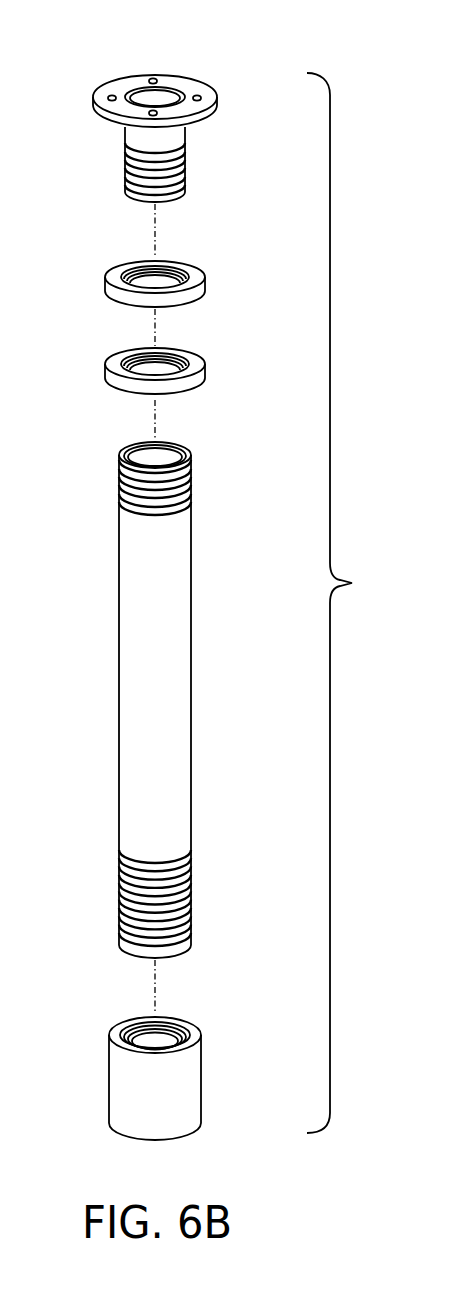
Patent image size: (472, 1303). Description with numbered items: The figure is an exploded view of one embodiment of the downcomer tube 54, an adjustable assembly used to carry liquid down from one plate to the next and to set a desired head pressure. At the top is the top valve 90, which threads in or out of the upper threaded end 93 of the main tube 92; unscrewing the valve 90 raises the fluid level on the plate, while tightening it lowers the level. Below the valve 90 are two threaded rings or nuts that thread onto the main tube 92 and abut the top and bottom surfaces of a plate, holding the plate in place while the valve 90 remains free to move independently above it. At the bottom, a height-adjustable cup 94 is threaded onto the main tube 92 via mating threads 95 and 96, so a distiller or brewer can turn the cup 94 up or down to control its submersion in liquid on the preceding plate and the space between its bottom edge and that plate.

The downcomer tube 54 is at (349, 603).
The top valve 90 is at (177, 72).
The main tube 92 is at (143, 700).
The upper threaded end 93 is at (119, 490).
The height-adjustable cup 94 is at (187, 1062).
The threads 95 is at (119, 900).
The threads 96 is at (181, 1031).